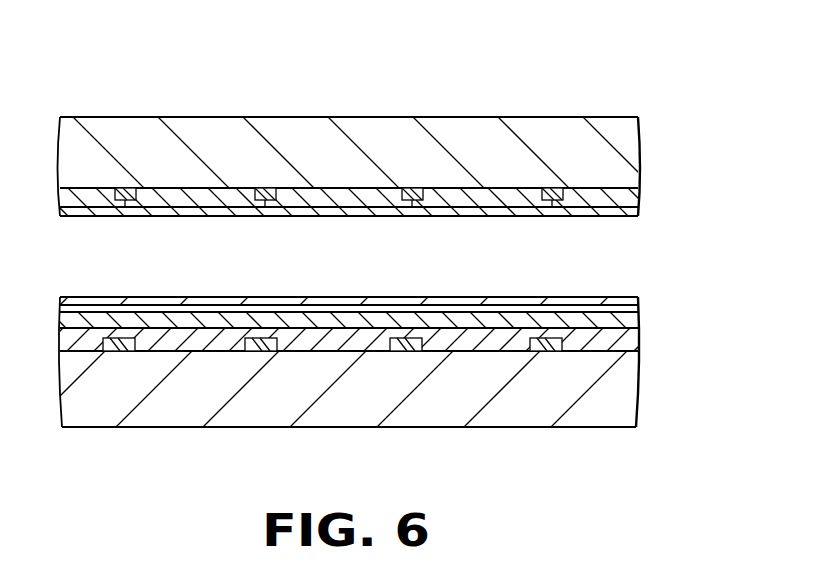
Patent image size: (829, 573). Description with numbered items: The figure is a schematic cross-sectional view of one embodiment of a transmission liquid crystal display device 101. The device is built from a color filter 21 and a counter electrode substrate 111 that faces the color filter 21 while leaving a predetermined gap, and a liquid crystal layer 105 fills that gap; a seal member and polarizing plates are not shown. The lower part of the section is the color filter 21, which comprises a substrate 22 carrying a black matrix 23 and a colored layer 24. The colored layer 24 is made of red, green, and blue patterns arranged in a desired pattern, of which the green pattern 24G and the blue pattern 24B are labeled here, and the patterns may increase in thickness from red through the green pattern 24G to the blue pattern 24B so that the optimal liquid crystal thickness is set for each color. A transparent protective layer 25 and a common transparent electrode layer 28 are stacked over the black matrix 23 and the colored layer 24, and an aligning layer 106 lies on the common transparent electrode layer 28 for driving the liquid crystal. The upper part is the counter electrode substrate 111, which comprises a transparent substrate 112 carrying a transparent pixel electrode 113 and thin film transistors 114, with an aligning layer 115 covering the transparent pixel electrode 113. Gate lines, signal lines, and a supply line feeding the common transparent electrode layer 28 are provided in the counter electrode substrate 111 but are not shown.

The liquid crystal display device 101 is at (486, 74).
The counter electrode substrate 111 is at (676, 104).
The transparent substrate 112 is at (640, 145).
The transparent pixel electrode 113 is at (640, 195).
The thin film transistor (TFT) 114 is at (126, 190).
The aligning layer 115 is at (640, 212).
The liquid crystal layer 105 is at (360, 272).
The aligning layer 106 is at (608, 297).
The common transparent electrode layer 28 is at (630, 308).
The transparent protective layer 25 is at (640, 318).
The colored layer 24 is at (650, 346).
The green pattern 24G is at (345, 340).
The blue pattern 24B is at (455, 340).
The black matrix 23 is at (118, 351).
The substrate 22 is at (628, 403).
The color filter 21 is at (616, 437).